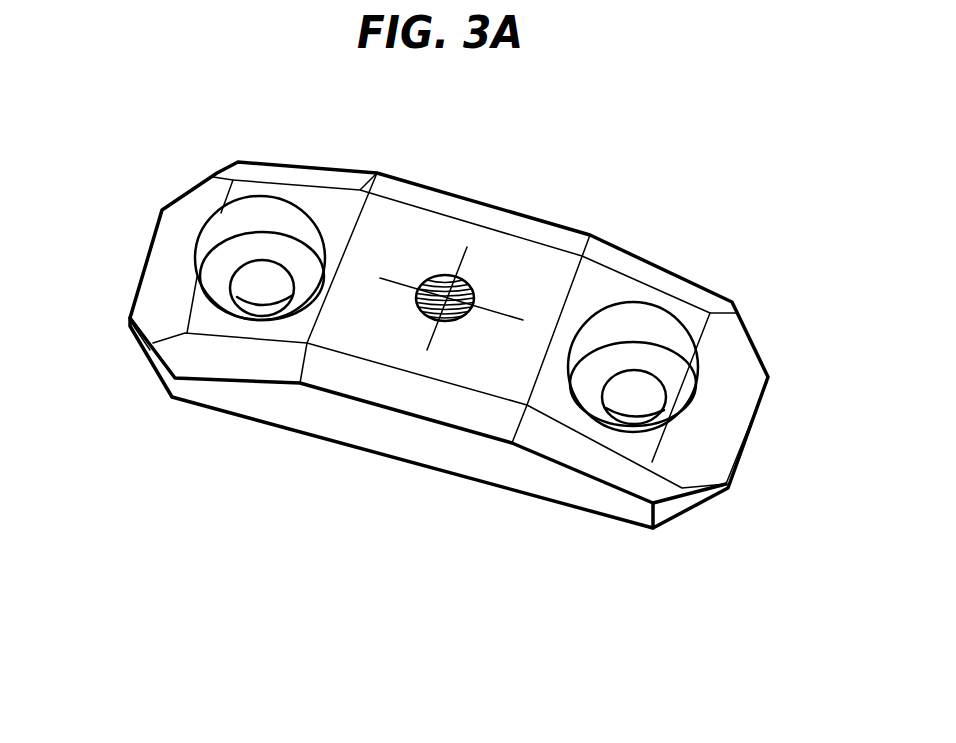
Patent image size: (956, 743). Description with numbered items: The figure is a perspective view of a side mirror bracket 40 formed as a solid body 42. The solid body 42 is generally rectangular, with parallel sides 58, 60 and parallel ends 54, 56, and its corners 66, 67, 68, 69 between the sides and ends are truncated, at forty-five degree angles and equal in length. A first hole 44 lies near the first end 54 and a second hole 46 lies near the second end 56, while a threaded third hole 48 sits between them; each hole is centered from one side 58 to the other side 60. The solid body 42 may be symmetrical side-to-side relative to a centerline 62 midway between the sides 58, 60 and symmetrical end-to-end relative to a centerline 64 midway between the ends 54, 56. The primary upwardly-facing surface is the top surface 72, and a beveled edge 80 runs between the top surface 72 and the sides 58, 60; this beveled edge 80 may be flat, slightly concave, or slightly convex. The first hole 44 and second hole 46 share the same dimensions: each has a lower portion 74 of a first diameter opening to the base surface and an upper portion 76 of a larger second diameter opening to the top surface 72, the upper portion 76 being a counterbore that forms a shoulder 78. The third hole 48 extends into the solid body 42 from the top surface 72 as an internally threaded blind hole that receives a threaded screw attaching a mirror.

The side mirror bracket 40 is at (722, 166).
The solid body 42 is at (562, 260).
The first hole 44 is at (207, 180).
The second hole 46 is at (641, 282).
The third hole 48 is at (438, 262).
The first end 54 is at (150, 245).
The second end 56 is at (742, 440).
The side 58 is at (367, 437).
The other side 60 is at (413, 183).
The centerline 62 is at (500, 313).
The centerline 64 is at (437, 340).
The truncated corner 66 is at (750, 330).
The truncated corner 67 is at (677, 507).
The truncated corner 68 is at (163, 372).
The truncated corner 69 is at (182, 192).
The top surface 72 is at (170, 220).
The lower portion 74 is at (273, 270).
The upper portion 76 is at (258, 212).
The shoulder 78 is at (213, 285).
The beveled edge 80 is at (492, 218).